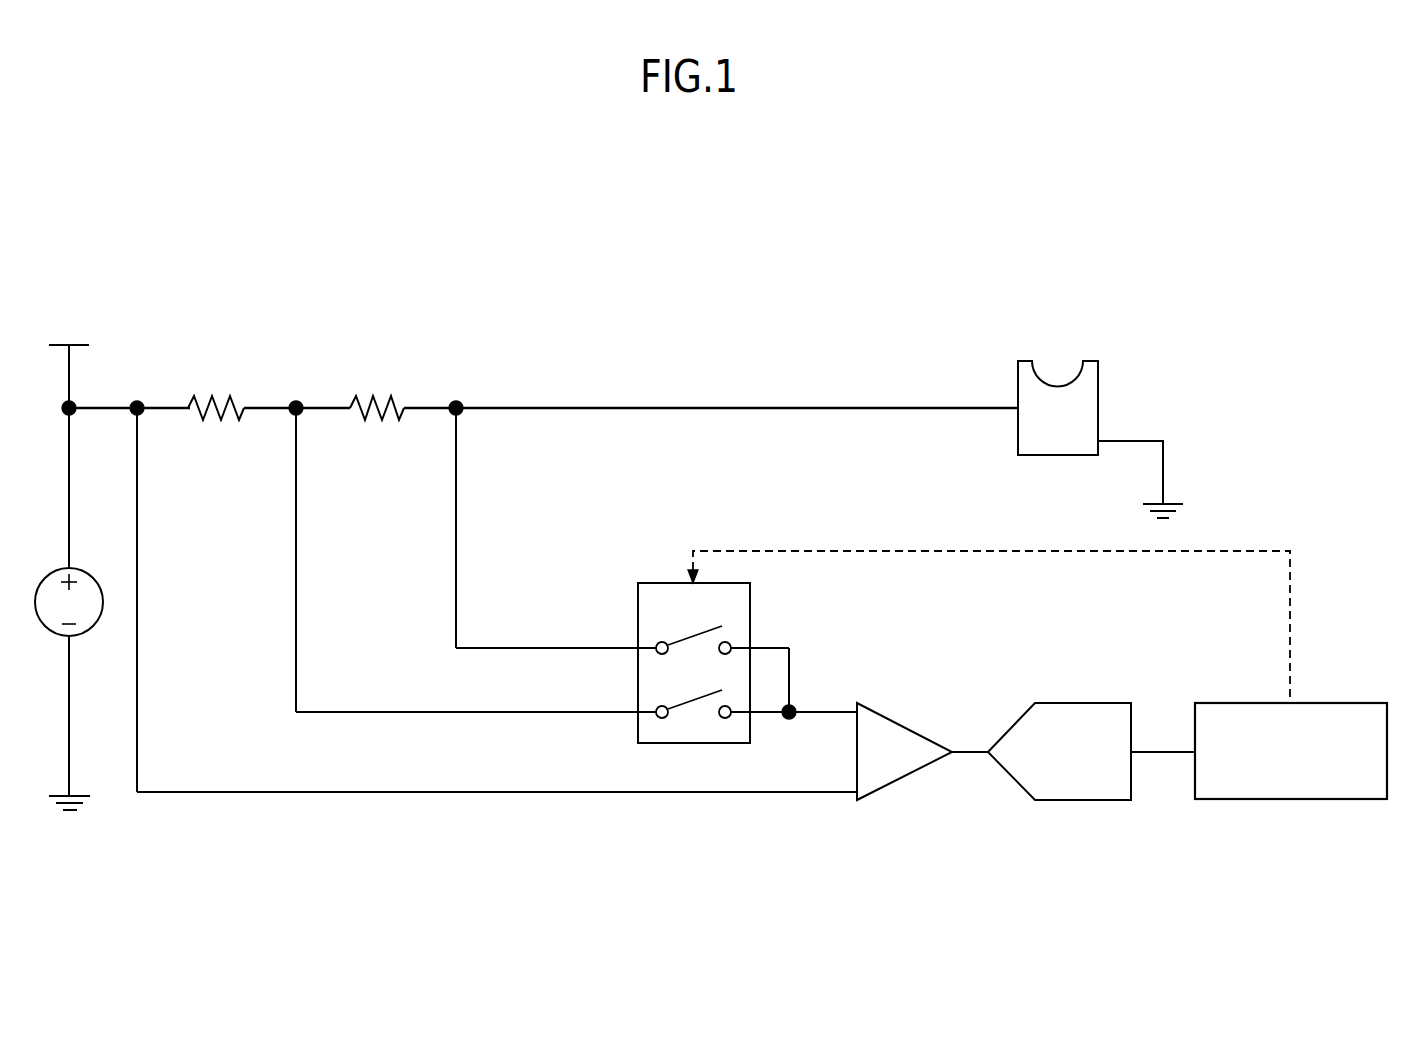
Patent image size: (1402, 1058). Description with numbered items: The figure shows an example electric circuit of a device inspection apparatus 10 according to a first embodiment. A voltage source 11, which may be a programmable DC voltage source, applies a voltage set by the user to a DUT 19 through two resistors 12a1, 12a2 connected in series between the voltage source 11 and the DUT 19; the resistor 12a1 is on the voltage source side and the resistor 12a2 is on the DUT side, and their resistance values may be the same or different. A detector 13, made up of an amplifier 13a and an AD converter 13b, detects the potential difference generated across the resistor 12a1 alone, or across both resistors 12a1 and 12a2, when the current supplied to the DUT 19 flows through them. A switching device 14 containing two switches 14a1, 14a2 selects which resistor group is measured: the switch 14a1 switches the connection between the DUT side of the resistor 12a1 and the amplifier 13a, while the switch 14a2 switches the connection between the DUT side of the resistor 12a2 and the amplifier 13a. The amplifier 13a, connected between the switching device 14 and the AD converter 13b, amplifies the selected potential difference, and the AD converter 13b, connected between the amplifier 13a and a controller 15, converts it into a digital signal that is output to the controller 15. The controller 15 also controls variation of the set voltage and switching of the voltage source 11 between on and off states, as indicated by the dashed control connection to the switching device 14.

The device inspection apparatus 10 is at (330, 262).
The voltage source 11 is at (45, 578).
The resistor 12a1 is at (214, 396).
The resistor 12a2 is at (373, 396).
The detector 13 is at (994, 767).
The amplifier 13a is at (906, 727).
The AD converter 13b is at (1086, 703).
The switching device 14 is at (647, 628).
The switch 14a1 is at (690, 698).
The switch 14a2 is at (690, 634).
The controller 15 is at (1240, 703).
The DUT 19 is at (1059, 361).